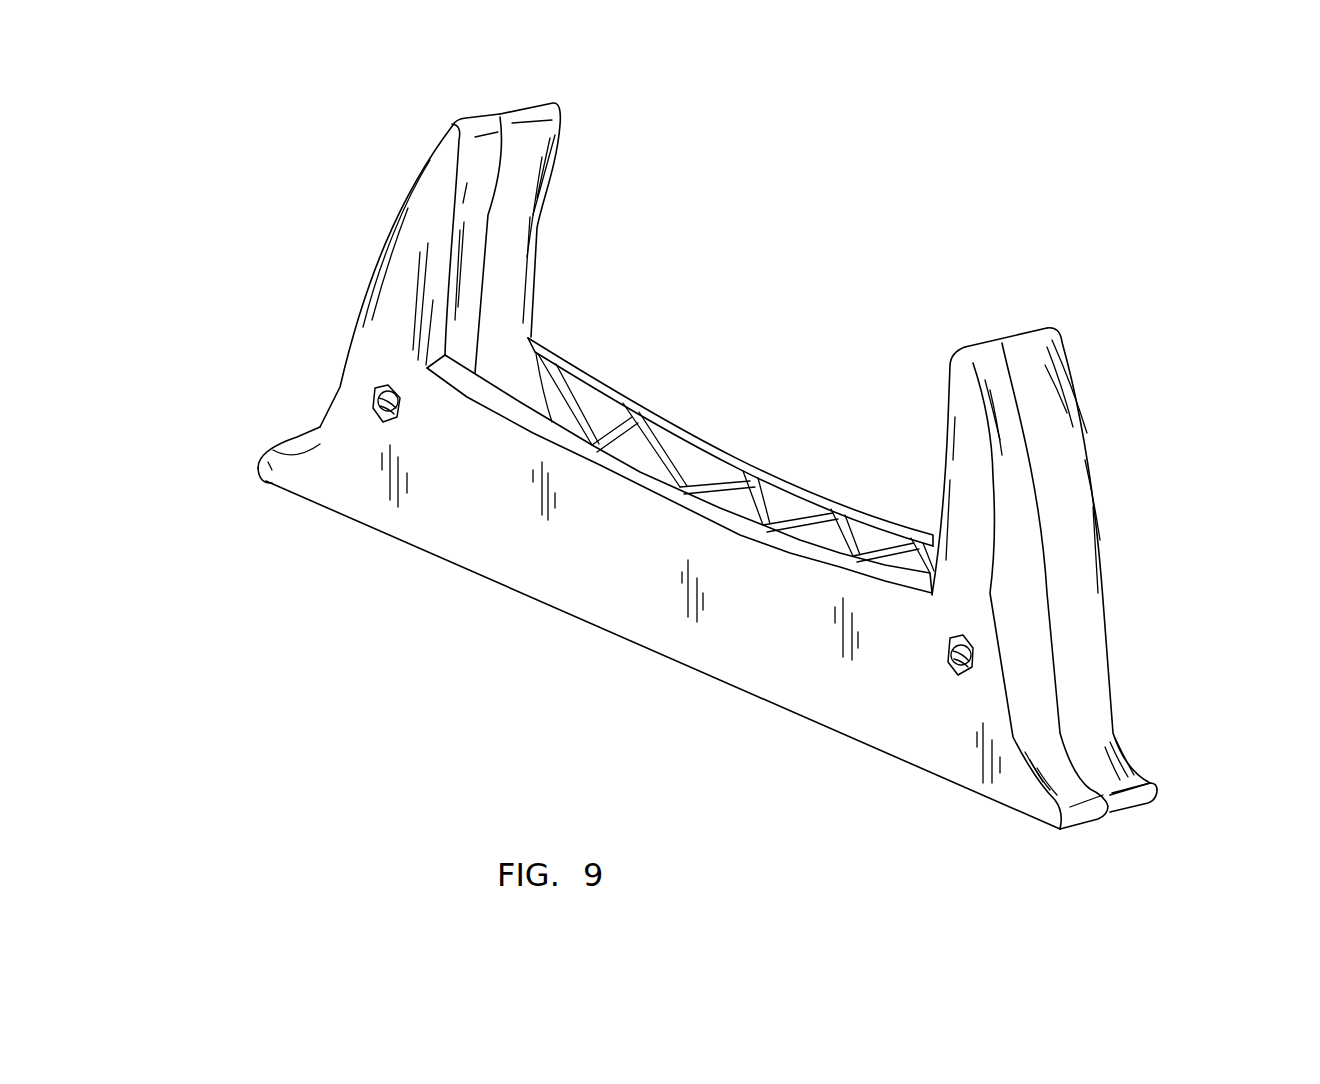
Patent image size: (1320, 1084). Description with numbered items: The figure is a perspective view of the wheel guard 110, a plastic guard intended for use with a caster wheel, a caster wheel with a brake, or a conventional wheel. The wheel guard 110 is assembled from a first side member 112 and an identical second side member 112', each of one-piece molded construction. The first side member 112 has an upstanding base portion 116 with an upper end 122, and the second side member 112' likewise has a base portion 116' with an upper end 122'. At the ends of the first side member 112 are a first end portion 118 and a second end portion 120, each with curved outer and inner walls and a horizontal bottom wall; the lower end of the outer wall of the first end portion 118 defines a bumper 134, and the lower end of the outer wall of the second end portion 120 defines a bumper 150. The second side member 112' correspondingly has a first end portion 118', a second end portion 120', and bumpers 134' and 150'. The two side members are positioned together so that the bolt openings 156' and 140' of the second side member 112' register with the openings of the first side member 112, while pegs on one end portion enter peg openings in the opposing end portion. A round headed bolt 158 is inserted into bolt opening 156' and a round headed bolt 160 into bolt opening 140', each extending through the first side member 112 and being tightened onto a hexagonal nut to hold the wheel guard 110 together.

The wheel guard 110 is at (833, 325).
The first side member 112 is at (552, 245).
The second side member 112' is at (542, 572).
The base portion 116 is at (735, 463).
The base portion 116' is at (850, 701).
The first end portion 118 is at (591, 220).
The first end portion 118' is at (1079, 588).
The second end portion 120 is at (1095, 578).
The second end portion 120' is at (377, 270).
The upper end 122 is at (730, 442).
The upper end 122' is at (679, 546).
The bumper 134 is at (240, 425).
The bumper 134' is at (1059, 854).
The bolt opening 140' is at (892, 730).
The bumper 150 is at (1192, 832).
The bumper 150' is at (212, 497).
The bolt opening 156' is at (421, 507).
The round headed bolt 158 is at (375, 394).
The round headed bolt 160 is at (977, 643).